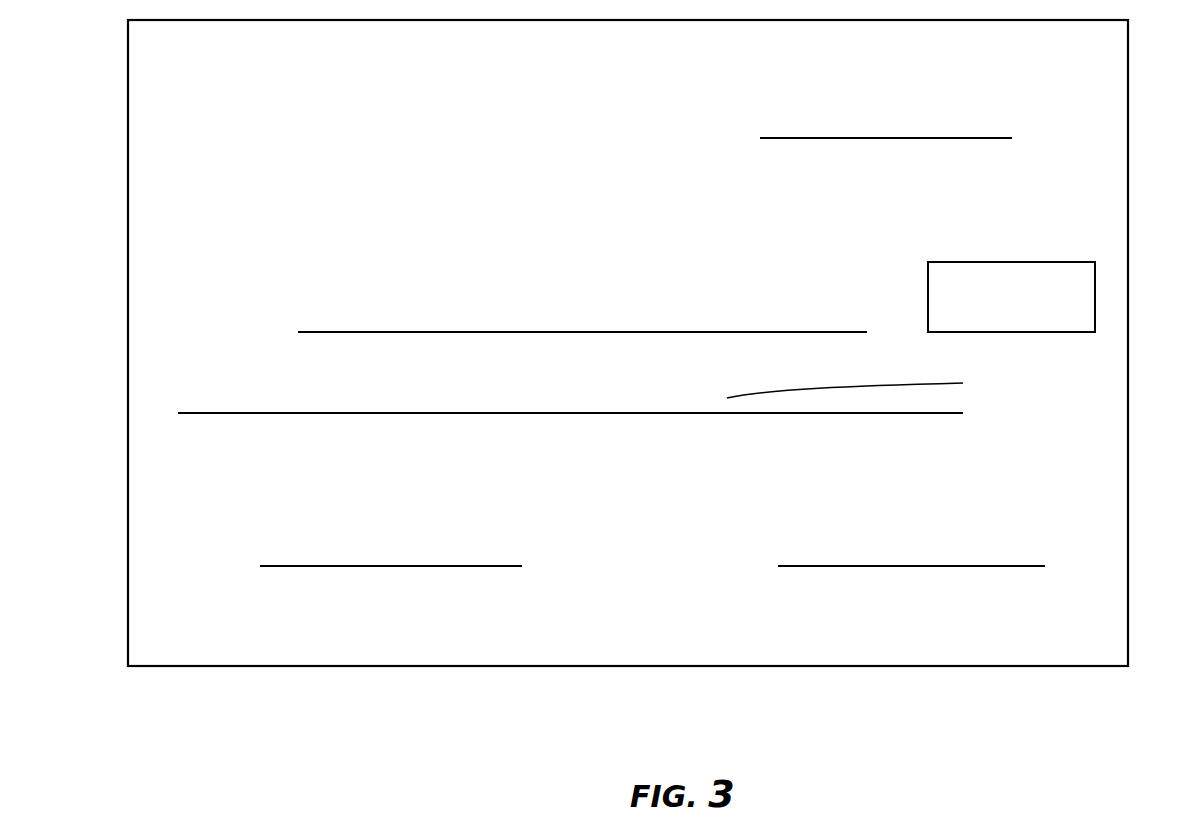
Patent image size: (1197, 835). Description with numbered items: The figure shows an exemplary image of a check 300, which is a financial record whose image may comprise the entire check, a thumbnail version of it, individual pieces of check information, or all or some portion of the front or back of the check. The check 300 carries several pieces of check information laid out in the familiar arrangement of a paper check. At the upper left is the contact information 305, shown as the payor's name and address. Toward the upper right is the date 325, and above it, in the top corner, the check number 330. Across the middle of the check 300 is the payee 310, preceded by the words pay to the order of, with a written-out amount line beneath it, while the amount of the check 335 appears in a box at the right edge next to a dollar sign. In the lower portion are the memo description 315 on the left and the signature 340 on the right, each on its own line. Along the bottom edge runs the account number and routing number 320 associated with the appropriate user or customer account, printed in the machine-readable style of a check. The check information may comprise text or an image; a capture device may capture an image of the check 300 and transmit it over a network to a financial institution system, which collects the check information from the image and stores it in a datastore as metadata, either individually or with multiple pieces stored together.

The check 300 is at (1025, 630).
The contact information 305 is at (170, 50).
The payee 310 is at (172, 268).
The memo description 315 is at (167, 514).
The account number and routing number 320 is at (708, 680).
The date 325 is at (693, 83).
The check number 330 is at (1095, 50).
The amount of the check 335 is at (1095, 252).
The signature 340 is at (1045, 500).